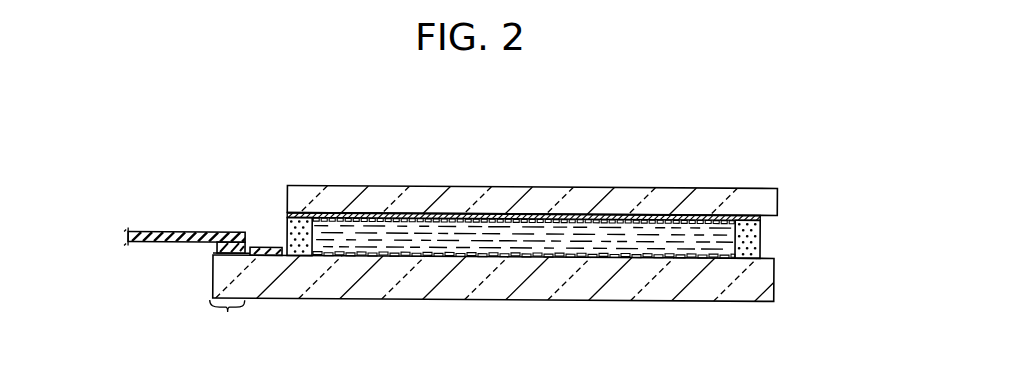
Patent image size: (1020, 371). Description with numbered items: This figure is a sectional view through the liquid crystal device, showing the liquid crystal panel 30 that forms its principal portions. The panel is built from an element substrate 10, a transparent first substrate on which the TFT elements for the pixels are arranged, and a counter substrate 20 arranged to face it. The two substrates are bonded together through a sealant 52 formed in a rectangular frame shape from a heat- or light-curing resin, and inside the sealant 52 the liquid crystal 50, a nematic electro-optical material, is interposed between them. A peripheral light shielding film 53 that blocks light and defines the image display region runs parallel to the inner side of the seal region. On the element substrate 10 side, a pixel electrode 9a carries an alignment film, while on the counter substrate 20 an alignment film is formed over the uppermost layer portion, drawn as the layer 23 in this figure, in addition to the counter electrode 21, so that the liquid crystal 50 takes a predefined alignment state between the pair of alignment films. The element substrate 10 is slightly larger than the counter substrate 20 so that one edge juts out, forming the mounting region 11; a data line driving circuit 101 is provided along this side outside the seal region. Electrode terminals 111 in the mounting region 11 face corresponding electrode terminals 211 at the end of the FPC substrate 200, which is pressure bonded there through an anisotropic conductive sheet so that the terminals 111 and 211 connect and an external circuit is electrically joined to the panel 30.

The liquid crystal panel 30 is at (590, 97).
The counter substrate 20 is at (467, 198).
The color filter layer 23 is at (547, 213).
The counter electrode 21 is at (635, 216).
The peripheral light shielding film 53 is at (328, 212).
The sealant 52 is at (287, 222).
The liquid crystal 50 is at (513, 246).
The pixel electrode 9a is at (370, 256).
The element substrate 10 is at (582, 288).
The mounting region 11 is at (226, 323).
The FPC substrate 200 is at (146, 231).
The electrode terminals 211 is at (212, 242).
The data line driving circuit 101 is at (253, 250).
The electrode terminals 111 is at (213, 249).